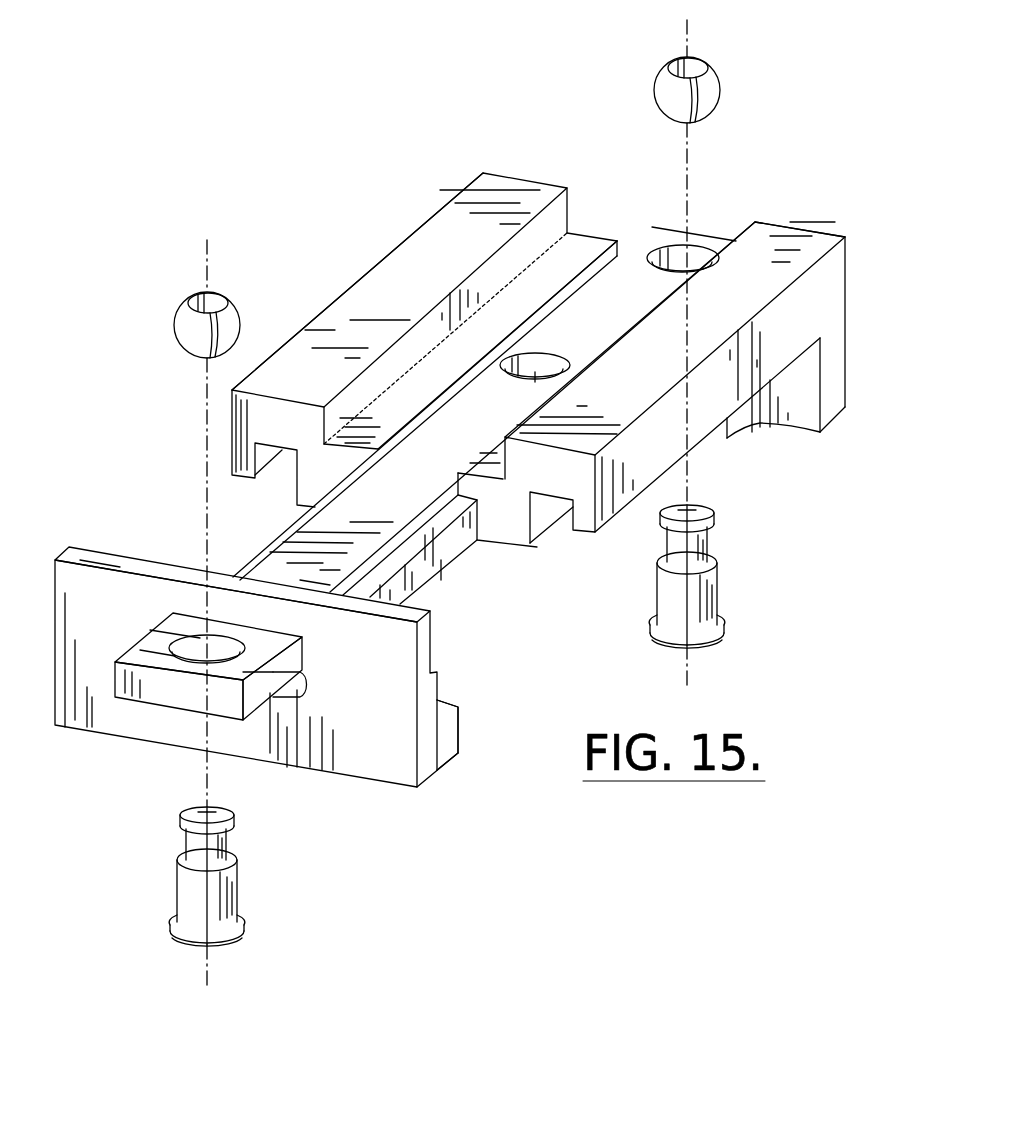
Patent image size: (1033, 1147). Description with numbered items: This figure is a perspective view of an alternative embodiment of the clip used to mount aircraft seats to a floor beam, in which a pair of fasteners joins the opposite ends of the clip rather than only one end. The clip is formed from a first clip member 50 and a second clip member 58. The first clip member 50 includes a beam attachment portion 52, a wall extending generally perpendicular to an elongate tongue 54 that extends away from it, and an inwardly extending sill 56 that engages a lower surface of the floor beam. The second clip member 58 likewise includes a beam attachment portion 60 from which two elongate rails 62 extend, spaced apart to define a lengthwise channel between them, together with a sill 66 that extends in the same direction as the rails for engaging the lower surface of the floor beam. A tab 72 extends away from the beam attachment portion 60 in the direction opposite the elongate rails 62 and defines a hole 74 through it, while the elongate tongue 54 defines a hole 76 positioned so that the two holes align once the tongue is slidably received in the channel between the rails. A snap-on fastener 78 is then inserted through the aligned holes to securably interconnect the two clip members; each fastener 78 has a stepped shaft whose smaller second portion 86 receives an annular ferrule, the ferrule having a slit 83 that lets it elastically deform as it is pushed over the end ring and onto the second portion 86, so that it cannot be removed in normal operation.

The first clip member 50 is at (230, 533).
The beam attachment portion 52 is at (423, 707).
The elongate tongue 54 is at (398, 508).
The sill 56 is at (443, 730).
The second clip member 58 is at (493, 146).
The beam attachment portion 60 is at (838, 370).
The elongate rails 62 is at (442, 285).
The sill 66 is at (716, 442).
The tab 72 is at (662, 243).
The hole 74 is at (690, 243).
The hole 76 is at (543, 368).
The fastener 78 is at (748, 554).
The slit 83 is at (700, 92).
The second portion 86 is at (668, 540).